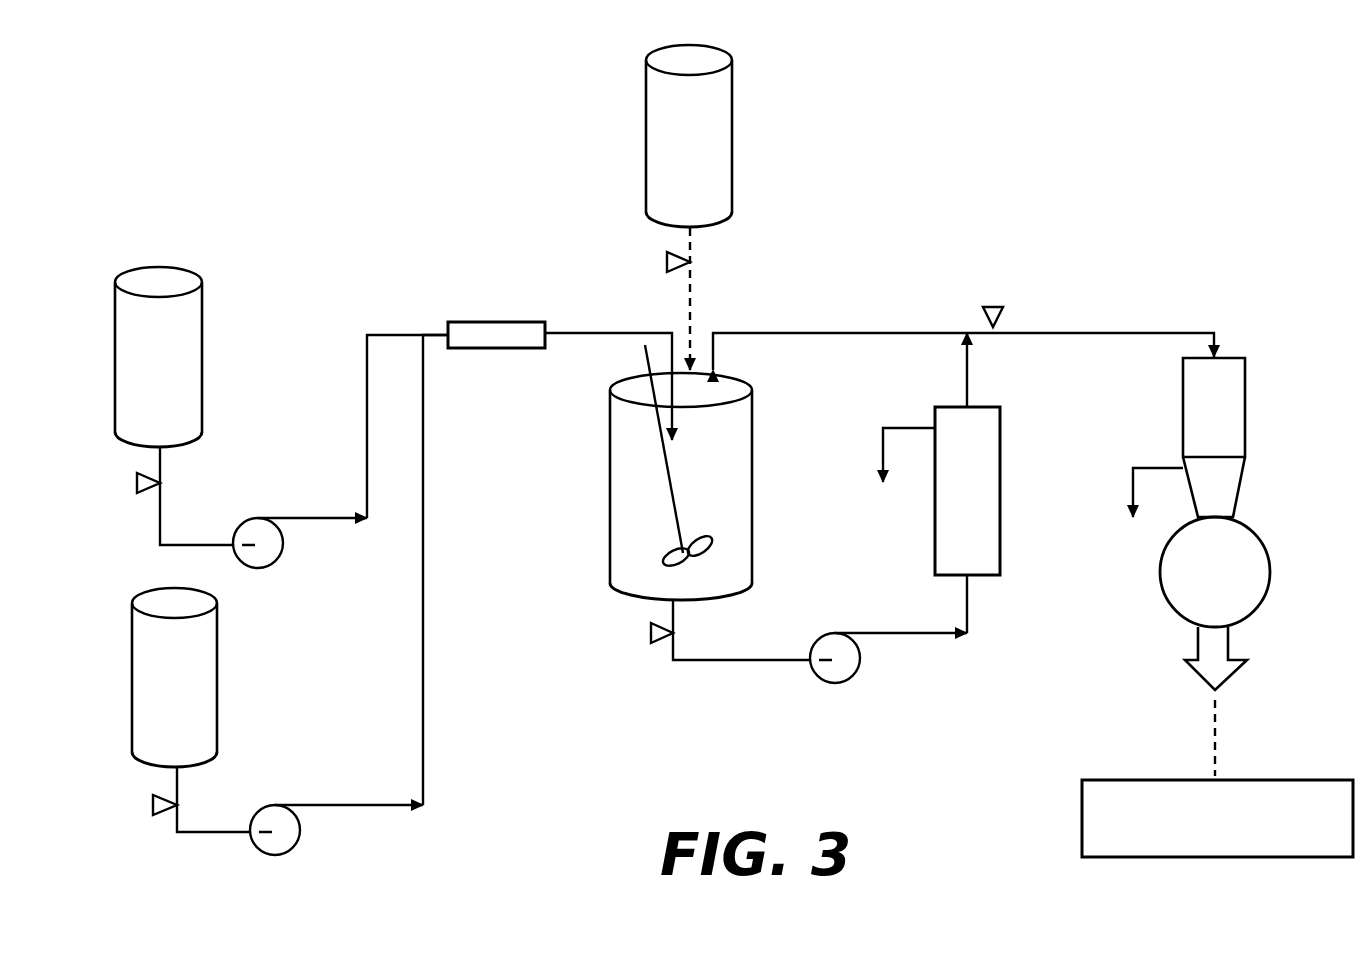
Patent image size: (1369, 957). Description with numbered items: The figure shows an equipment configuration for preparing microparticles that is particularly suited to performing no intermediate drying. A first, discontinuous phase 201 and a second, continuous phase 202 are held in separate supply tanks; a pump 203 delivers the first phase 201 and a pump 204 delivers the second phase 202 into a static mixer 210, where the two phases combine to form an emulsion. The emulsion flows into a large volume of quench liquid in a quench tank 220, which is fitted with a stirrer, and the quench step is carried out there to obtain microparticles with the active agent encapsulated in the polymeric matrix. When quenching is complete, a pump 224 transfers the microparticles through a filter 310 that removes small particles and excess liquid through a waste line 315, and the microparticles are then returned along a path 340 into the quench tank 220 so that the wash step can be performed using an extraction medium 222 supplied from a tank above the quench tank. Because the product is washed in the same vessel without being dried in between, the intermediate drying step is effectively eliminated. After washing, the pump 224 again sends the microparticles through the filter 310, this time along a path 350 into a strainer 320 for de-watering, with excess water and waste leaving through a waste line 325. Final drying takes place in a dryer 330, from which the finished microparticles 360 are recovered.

The first phase 201 is at (203, 343).
The second phase 202 is at (218, 688).
The pump 203 is at (258, 517).
The pump 204 is at (298, 838).
The static mixer 210 is at (483, 350).
The quench tank 220 is at (753, 490).
The extraction medium 222 is at (733, 140).
The pump 224 is at (858, 670).
The filter 310 is at (1001, 490).
The waste line 315 is at (900, 427).
The strainer 320 is at (1247, 425).
The waste line 325 is at (1150, 467).
The dryer 330 is at (1265, 545).
The path 340 is at (796, 333).
The path 350 is at (1083, 331).
The finished microparticles 360 is at (1245, 780).